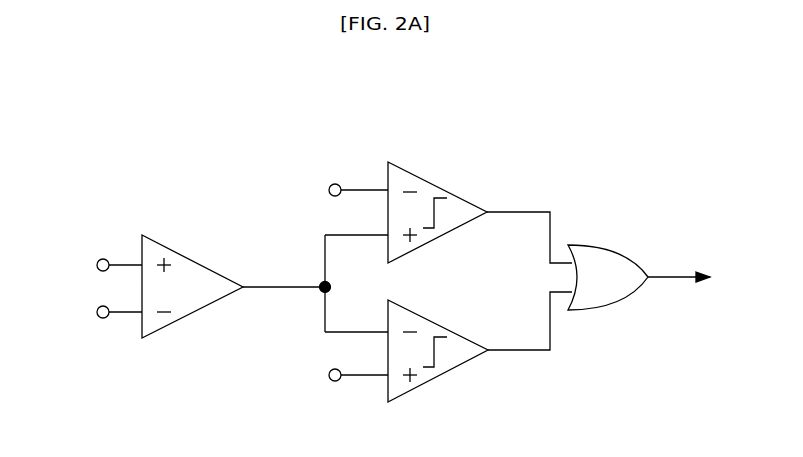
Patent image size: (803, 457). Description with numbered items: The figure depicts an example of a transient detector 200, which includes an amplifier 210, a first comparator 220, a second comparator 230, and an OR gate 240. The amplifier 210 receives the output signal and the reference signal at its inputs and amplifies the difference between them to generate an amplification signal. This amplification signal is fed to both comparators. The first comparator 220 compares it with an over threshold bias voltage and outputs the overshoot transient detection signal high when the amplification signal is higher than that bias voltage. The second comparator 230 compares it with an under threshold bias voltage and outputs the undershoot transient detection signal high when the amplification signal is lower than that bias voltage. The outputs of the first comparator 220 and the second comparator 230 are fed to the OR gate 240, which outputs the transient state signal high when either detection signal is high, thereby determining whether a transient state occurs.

The transient detector 200 is at (383, 244).
The amplifier 210 is at (178, 251).
The first comparator 220 is at (435, 240).
The second comparator 230 is at (438, 380).
The OR gate 240 is at (633, 300).